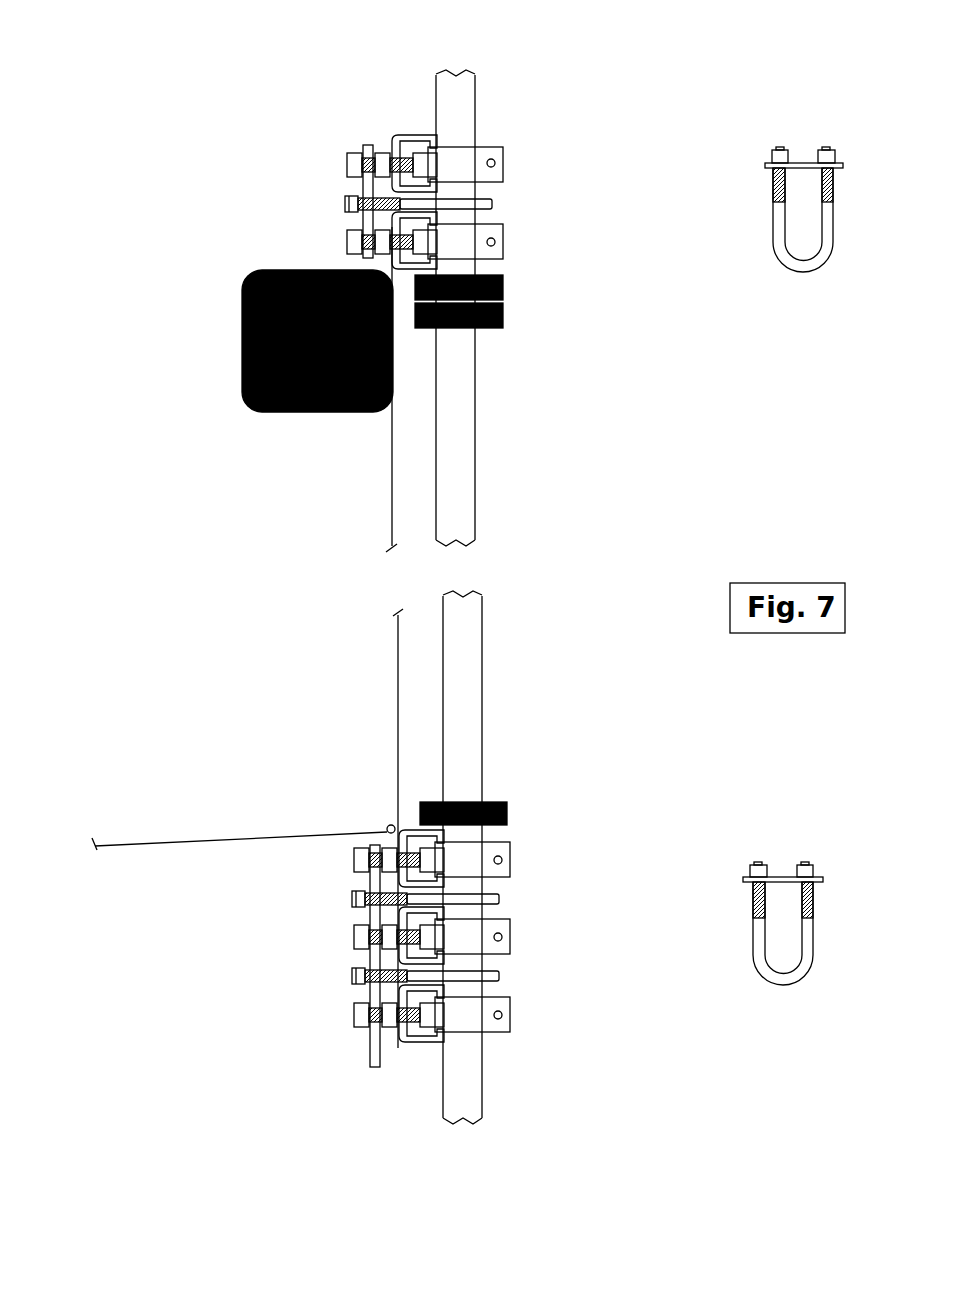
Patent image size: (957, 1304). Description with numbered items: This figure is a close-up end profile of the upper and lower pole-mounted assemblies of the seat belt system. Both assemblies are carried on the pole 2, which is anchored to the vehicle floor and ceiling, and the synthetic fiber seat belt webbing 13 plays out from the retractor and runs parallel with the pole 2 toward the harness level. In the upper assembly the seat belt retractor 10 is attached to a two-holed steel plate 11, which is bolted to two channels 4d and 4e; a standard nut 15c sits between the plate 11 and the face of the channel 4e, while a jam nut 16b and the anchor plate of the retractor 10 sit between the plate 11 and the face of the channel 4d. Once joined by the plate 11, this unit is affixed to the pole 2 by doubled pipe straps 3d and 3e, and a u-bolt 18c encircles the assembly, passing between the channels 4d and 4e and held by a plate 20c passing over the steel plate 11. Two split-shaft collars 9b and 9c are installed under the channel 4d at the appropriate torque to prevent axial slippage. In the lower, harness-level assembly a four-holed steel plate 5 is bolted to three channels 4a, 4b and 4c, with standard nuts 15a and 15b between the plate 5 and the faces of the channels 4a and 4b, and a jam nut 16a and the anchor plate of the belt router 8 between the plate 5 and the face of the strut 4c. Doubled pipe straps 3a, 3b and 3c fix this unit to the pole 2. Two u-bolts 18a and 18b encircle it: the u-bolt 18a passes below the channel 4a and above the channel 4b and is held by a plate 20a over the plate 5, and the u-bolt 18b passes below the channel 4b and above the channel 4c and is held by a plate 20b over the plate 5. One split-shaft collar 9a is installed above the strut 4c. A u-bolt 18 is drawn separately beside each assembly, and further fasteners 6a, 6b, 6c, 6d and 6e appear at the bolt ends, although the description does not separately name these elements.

The pole 2 is at (470, 1105).
The pipe strap 3a is at (510, 1013).
The pipe strap 3b is at (510, 937).
The pipe strap 3c is at (510, 857).
The pipe strap 3d is at (503, 247).
The pipe strap 3e is at (503, 163).
The channel 4a is at (400, 1037).
The channel 4b is at (380, 962).
The channel 4c is at (405, 882).
The channel 4d is at (400, 257).
The channel 4e is at (403, 178).
The four-holed steel plate 5 is at (370, 1055).
The nut 6a is at (353, 1005).
The nut 6b is at (353, 928).
The nut 6c is at (353, 855).
The nut 6d is at (347, 240).
The nut 6e is at (347, 153).
The belt router 8 is at (388, 827).
The split-shaft collar 9a is at (505, 803).
The split-shaft collar 9b is at (503, 323).
The split-shaft collar 9c is at (503, 283).
The seat belt retractor 10 is at (240, 410).
The two-holed steel plate 11 is at (363, 148).
The seat belt webbing 13 is at (395, 655).
The standard nut 15a is at (390, 1013).
The standard nut 15b is at (360, 938).
The standard nut 15c is at (393, 170).
The jam nut 16a is at (367, 865).
The jam nut 16b is at (372, 233).
The U-bolt 18 is at (801, 566).
The u-bolt 18a is at (750, 935).
The u-bolt 18b is at (737, 900).
The u-bolt 18c is at (493, 202).
The plate 20a is at (357, 985).
The plate 20b is at (357, 905).
The plate 20c is at (357, 197).